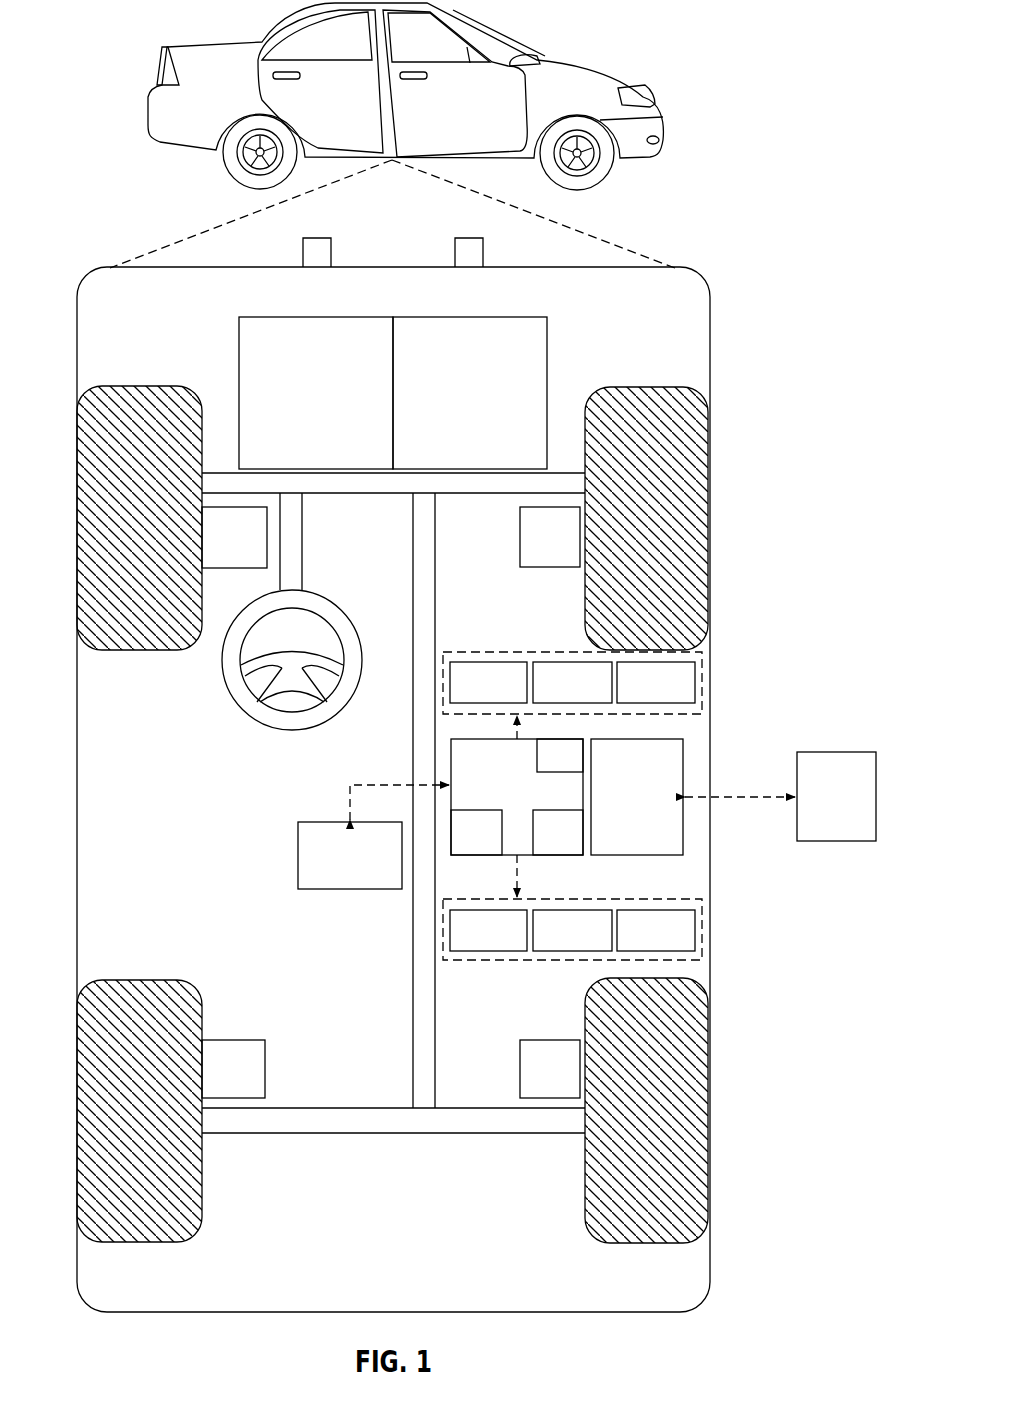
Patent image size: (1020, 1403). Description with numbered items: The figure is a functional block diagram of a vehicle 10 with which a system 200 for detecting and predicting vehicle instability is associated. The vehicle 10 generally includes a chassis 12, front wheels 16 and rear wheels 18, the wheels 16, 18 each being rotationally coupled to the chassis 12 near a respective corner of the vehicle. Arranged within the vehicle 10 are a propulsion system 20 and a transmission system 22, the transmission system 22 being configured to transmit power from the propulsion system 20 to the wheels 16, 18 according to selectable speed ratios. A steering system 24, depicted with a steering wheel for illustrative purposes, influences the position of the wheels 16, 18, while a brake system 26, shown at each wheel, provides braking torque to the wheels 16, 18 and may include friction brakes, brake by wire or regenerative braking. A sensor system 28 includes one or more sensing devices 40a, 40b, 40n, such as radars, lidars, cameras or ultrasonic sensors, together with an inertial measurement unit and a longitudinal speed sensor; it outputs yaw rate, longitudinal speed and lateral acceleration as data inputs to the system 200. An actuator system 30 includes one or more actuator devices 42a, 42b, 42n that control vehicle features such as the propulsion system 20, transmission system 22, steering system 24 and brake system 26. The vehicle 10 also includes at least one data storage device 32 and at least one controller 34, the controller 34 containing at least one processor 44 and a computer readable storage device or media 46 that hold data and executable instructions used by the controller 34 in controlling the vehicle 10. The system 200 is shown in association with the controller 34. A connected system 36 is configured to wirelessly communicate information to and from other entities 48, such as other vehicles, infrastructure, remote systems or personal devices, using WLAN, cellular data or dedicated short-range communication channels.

The vehicle 10 is at (157, 83).
The chassis 12 is at (413, 966).
The front wheels 16 is at (138, 386).
The rear wheels 18 is at (138, 1243).
The propulsion system 20 is at (330, 406).
The transmission system 22 is at (482, 406).
The steering system 24 is at (313, 566).
The brake system 26 is at (247, 551).
The sensor system 28 is at (532, 652).
The actuator system 30 is at (537, 960).
The data storage device 32 is at (364, 870).
The controller 34 is at (531, 794).
The connected system 36 is at (651, 812).
The sensing device 40a is at (510, 697).
The sensing device 40b is at (594, 697).
The sensing device 40n is at (677, 697).
The actuator device 42a is at (510, 945).
The actuator device 42b is at (594, 945).
The actuator device 42n is at (677, 945).
The processor 44 is at (490, 847).
The computer readable storage device or media 46 is at (572, 847).
The other entities 48 is at (850, 812).
The system for detecting and predicting vehicle instability 200 is at (580, 769).